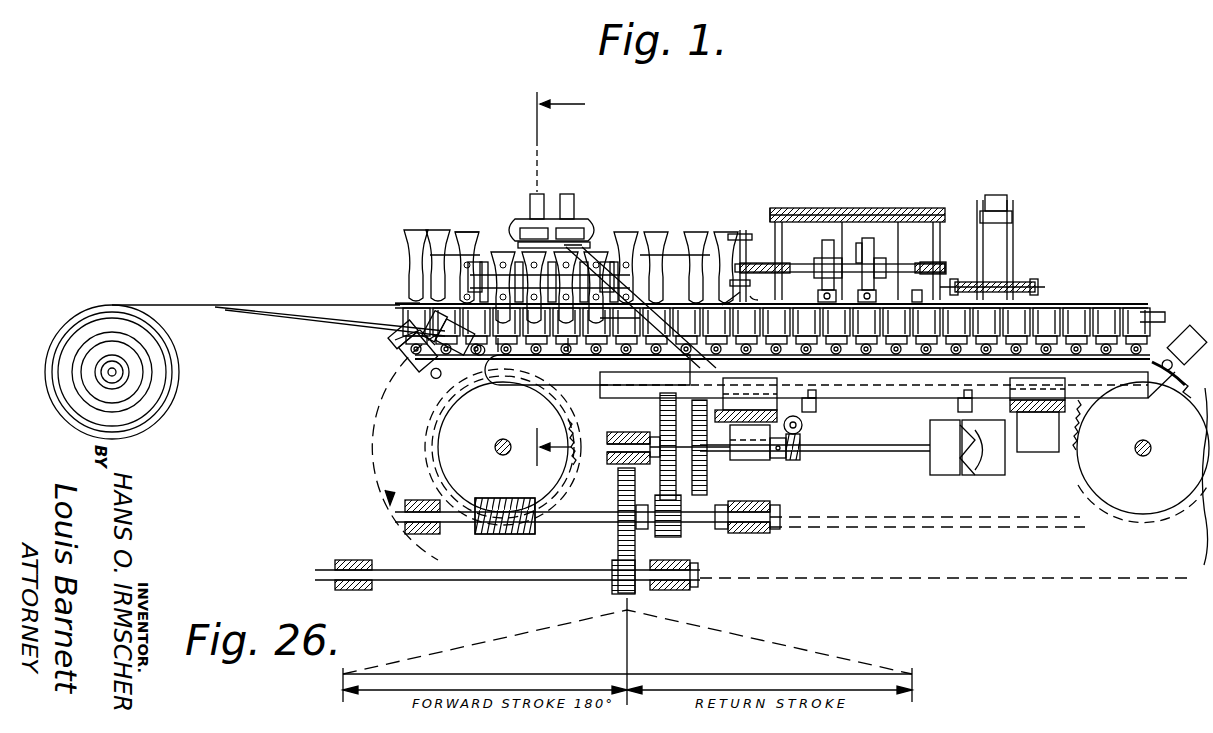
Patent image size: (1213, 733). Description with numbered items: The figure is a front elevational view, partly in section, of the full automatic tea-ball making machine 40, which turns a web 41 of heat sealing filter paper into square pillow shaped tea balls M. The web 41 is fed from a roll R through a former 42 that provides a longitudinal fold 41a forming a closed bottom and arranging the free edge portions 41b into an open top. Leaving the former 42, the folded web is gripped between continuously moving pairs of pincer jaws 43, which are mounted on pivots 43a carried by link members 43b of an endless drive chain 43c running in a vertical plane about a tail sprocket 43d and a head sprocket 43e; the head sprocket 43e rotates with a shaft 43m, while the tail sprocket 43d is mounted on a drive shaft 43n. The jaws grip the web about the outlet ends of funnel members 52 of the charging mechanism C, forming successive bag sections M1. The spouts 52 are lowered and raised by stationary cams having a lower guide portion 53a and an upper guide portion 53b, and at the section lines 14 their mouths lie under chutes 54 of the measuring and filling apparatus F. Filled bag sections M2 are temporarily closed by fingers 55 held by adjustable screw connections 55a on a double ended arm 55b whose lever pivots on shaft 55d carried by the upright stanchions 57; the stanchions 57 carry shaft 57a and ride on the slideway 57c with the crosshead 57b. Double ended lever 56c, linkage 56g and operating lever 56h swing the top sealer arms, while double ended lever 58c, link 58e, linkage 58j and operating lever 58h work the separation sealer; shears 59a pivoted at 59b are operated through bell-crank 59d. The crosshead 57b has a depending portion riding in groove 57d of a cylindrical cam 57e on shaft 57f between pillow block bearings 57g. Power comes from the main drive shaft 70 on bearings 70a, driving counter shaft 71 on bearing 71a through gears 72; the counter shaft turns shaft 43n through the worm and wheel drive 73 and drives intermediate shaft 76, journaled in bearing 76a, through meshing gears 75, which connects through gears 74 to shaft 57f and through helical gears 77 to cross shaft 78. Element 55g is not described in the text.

The roll R is at (70, 340).
The web 41 is at (178, 304).
The fold 41a is at (826, 352).
The free longitudinally extending edge portions 41b is at (392, 303).
The former 42 is at (320, 322).
The pincer jaws 43 is at (395, 383).
The pivots 43a is at (1172, 385).
The link members 43b is at (428, 402).
The endless drive chain 43c is at (1188, 395).
The tail sprocket 43d is at (572, 430).
The head sprocket 43e is at (1072, 468).
The shaft 43m is at (1143, 457).
The drive shaft 43n is at (495, 450).
The funnel members 52 is at (425, 232).
The lower guide portion 53a is at (405, 347).
The upper guide portion 53b is at (490, 236).
The chutes 54 is at (522, 250).
The fingers 55 is at (753, 300).
The adjustable screw connections 55a is at (625, 328).
The double ended arm 55b is at (662, 350).
The shaft 55d is at (942, 264).
The bracket 55g is at (758, 240).
The double ended lever 56c is at (828, 242).
The linkage 56g is at (816, 294).
The operating lever 56h is at (836, 262).
The upright bracket stanchions 57 is at (748, 240).
The shaft 57a is at (785, 207).
The crosshead 57b is at (858, 394).
The slideway 57c is at (944, 422).
The groove 57d is at (995, 476).
The cylindrical cam 57e is at (955, 472).
The shaft 57f is at (858, 452).
The pillow block bearings 57g is at (1030, 465).
The double ended lever 58c is at (885, 258).
The link 58e is at (865, 296).
The operating lever 58h is at (933, 300).
The linkage 58j is at (870, 240).
The shears 59a is at (985, 282).
The pivot 59b is at (1038, 287).
The bell-crank 59d is at (1000, 196).
The machine 40 is at (886, 168).
The section lines 14 is at (547, 279).
The main drive shaft 70 is at (436, 581).
The bearings 70a is at (358, 560).
The counter shaft 71 is at (586, 522).
The bearing 71a is at (432, 534).
The gears 72 is at (637, 540).
The worm and wheel drive 73 is at (540, 512).
The gears 74 is at (708, 470).
The meshing gears 75 is at (683, 525).
The intermediate shaft 76 is at (636, 432).
The bearing 76a is at (600, 455).
The helical gears 77 is at (800, 455).
The cross shaft 78 is at (803, 422).
The charging mechanism C is at (471, 220).
The measuring and filling apparatus F is at (567, 212).
The tea balls M is at (1150, 322).
The bag sections M1 is at (512, 348).
The filled bag sections M2 is at (570, 352).